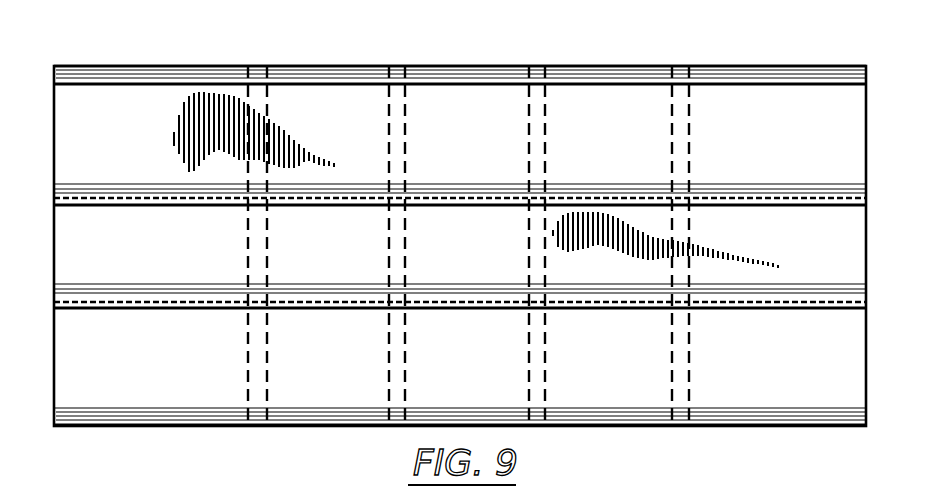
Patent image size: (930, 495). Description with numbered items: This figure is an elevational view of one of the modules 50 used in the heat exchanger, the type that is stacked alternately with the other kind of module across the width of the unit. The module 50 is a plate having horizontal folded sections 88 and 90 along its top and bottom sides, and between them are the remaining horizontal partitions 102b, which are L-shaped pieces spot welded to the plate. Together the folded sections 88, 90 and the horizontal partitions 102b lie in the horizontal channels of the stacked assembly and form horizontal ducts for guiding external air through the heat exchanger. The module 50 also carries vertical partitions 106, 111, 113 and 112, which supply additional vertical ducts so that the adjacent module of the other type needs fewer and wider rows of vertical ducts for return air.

The module 50 is at (815, 103).
The folded section 88 is at (182, 78).
The folded section 90 is at (318, 428).
The horizontal partition 102b is at (441, 184).
The partition 106 is at (270, 146).
The partition 111 is at (432, 226).
The partition 112 is at (692, 148).
The partition 113 is at (547, 142).